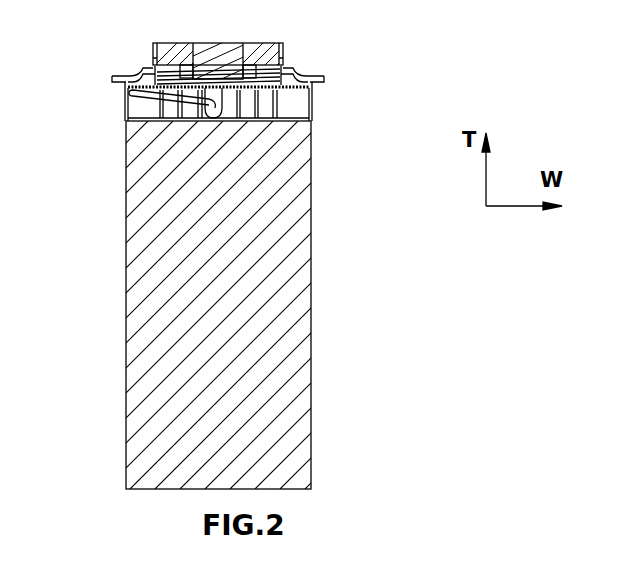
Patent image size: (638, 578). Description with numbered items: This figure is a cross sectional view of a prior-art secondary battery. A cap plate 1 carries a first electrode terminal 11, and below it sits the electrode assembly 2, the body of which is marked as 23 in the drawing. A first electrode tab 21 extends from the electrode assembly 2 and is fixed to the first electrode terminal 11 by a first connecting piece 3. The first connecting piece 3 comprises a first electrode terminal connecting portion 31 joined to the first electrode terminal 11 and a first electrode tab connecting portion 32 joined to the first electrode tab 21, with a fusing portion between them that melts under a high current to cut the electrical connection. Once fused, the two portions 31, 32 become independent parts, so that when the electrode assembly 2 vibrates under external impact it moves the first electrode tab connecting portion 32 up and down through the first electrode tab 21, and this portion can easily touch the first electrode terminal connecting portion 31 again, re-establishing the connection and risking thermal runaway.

The cap plate 1 is at (217, 62).
The first electrode terminal 11 is at (227, 48).
The electrode assembly 2 is at (319, 285).
The first electrode tab 21 is at (197, 106).
The electrode body 23 is at (157, 248).
The first connecting piece 3 is at (181, 92).
The first electrode terminal connecting portion 31 is at (132, 86).
The first electrode tab connecting portion 32 is at (133, 92).